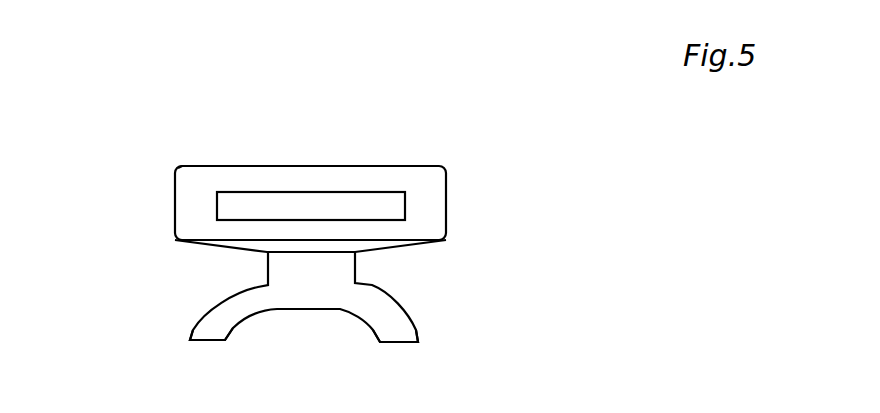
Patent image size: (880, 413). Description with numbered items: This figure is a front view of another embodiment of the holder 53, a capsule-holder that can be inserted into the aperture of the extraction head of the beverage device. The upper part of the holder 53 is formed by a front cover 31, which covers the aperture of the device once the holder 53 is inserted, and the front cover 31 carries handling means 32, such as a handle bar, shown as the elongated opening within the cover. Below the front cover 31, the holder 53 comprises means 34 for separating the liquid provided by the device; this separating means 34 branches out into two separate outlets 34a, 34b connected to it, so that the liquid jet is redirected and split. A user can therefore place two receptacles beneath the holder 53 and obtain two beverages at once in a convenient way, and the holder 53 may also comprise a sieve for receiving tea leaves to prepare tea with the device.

The front cover 31 is at (433, 183).
The handling means 32 is at (296, 199).
The holder 53 is at (185, 160).
The means for separating the liquid 34 is at (292, 262).
The outlet 34a is at (223, 318).
The outlet 34b is at (398, 322).